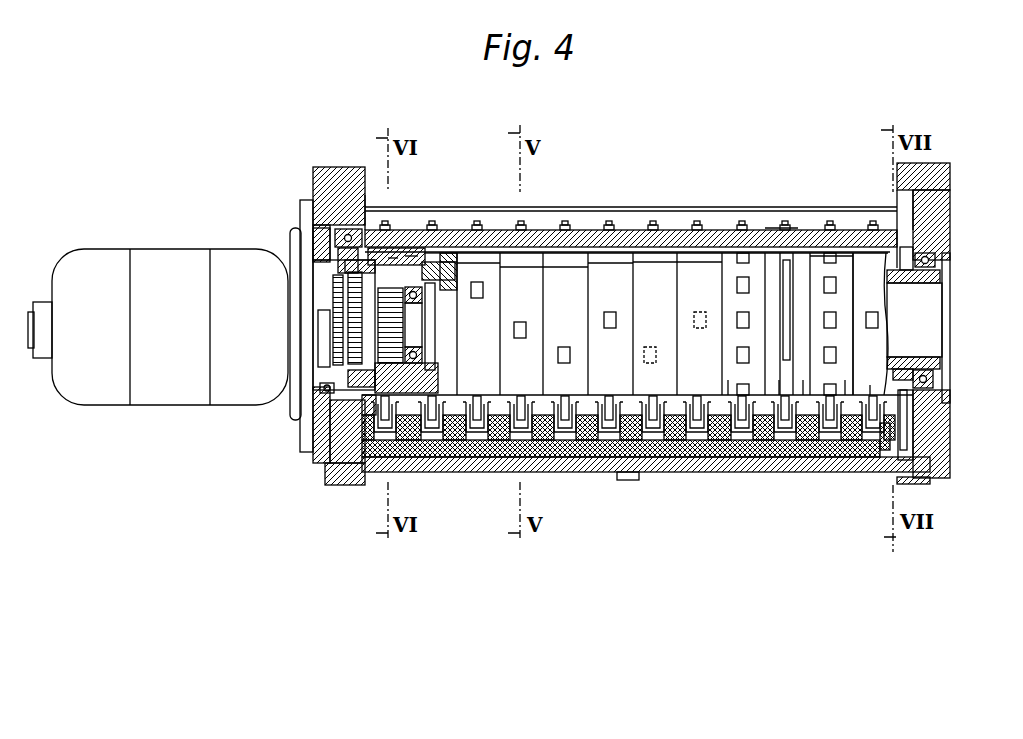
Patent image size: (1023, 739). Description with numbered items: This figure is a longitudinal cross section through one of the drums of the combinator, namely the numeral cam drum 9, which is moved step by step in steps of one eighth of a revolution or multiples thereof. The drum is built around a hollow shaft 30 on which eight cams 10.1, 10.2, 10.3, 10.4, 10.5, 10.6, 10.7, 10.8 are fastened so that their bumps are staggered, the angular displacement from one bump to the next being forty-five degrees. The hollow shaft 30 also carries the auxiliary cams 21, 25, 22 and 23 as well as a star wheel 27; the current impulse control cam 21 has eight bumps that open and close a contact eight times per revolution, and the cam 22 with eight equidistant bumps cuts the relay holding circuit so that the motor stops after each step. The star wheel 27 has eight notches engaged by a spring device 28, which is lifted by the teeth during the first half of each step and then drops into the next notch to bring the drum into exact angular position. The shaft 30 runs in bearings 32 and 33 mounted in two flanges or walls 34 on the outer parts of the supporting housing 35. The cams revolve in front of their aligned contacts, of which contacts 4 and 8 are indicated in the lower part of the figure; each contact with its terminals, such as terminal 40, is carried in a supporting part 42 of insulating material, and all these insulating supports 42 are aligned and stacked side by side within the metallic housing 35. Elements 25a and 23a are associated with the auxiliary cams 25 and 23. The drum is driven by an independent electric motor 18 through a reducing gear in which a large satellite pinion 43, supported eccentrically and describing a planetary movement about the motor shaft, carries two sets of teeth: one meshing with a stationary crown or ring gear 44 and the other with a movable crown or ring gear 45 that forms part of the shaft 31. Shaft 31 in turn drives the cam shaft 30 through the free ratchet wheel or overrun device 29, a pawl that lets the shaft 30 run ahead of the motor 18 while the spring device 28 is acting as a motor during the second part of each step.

The electric motor 18 is at (112, 383).
The bearing 32 is at (334, 232).
The stationary crown or ring gear 44 is at (318, 255).
The shaft 31 is at (378, 302).
The large satellite pinion 43 is at (348, 344).
The movable crown or ring gear 45 is at (320, 394).
The flanges or walls 34 is at (327, 444).
The free ratchet wheel or overrun device 29 is at (392, 258).
The cam 10.1 is at (410, 256).
The cam 10.2 is at (432, 252).
The hollow shaft 30 is at (448, 262).
The cam 10.3 is at (477, 263).
The cam 10.4 is at (522, 267).
The cam 10.5 is at (560, 267).
The cam 10.6 is at (608, 263).
The cam 10.7 is at (655, 262).
The cam 10.8 is at (697, 262).
The terminal 40 is at (781, 226).
The cam drum 9 is at (815, 256).
The star wheel 27 is at (935, 243).
The bearing 33 is at (940, 265).
The auxiliary cam 23 is at (876, 358).
The spring device 28 is at (945, 403).
The contact 4 is at (495, 438).
The supporting housing 35 is at (603, 474).
The contact 8 is at (677, 476).
The supporting part 42 is at (375, 462).
The current impulse control cam 21 is at (728, 390).
The auxiliary cam 25 is at (806, 385).
The cam 22 is at (846, 385).
The contact pin 25a is at (780, 388).
The end disc hub 23a is at (873, 395).